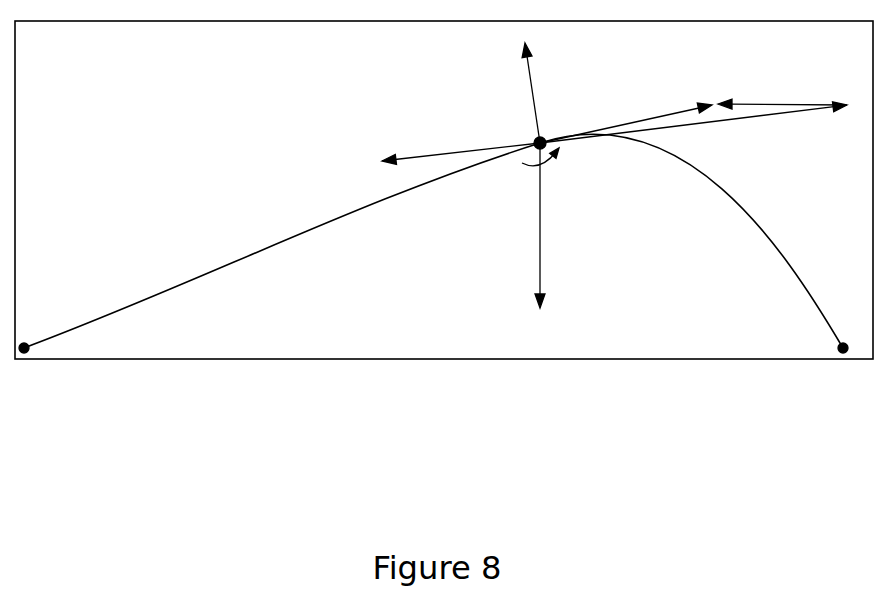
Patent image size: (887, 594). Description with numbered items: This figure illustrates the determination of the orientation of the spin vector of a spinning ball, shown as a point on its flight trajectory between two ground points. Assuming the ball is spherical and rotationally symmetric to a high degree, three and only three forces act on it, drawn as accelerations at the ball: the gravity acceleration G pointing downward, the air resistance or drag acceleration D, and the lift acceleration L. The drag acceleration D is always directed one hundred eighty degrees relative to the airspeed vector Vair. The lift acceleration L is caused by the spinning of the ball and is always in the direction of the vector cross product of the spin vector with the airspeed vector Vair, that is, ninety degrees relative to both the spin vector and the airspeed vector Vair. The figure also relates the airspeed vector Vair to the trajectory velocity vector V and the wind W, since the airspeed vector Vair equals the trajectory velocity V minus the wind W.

The lift acceleration L is at (541, 97).
The gravity acceleration G is at (547, 247).
The air resistance/drag acceleration D is at (438, 153).
The trajectory velocity vector V is at (641, 111).
The airspeed vector Vair is at (748, 140).
The wind vector W is at (773, 101).